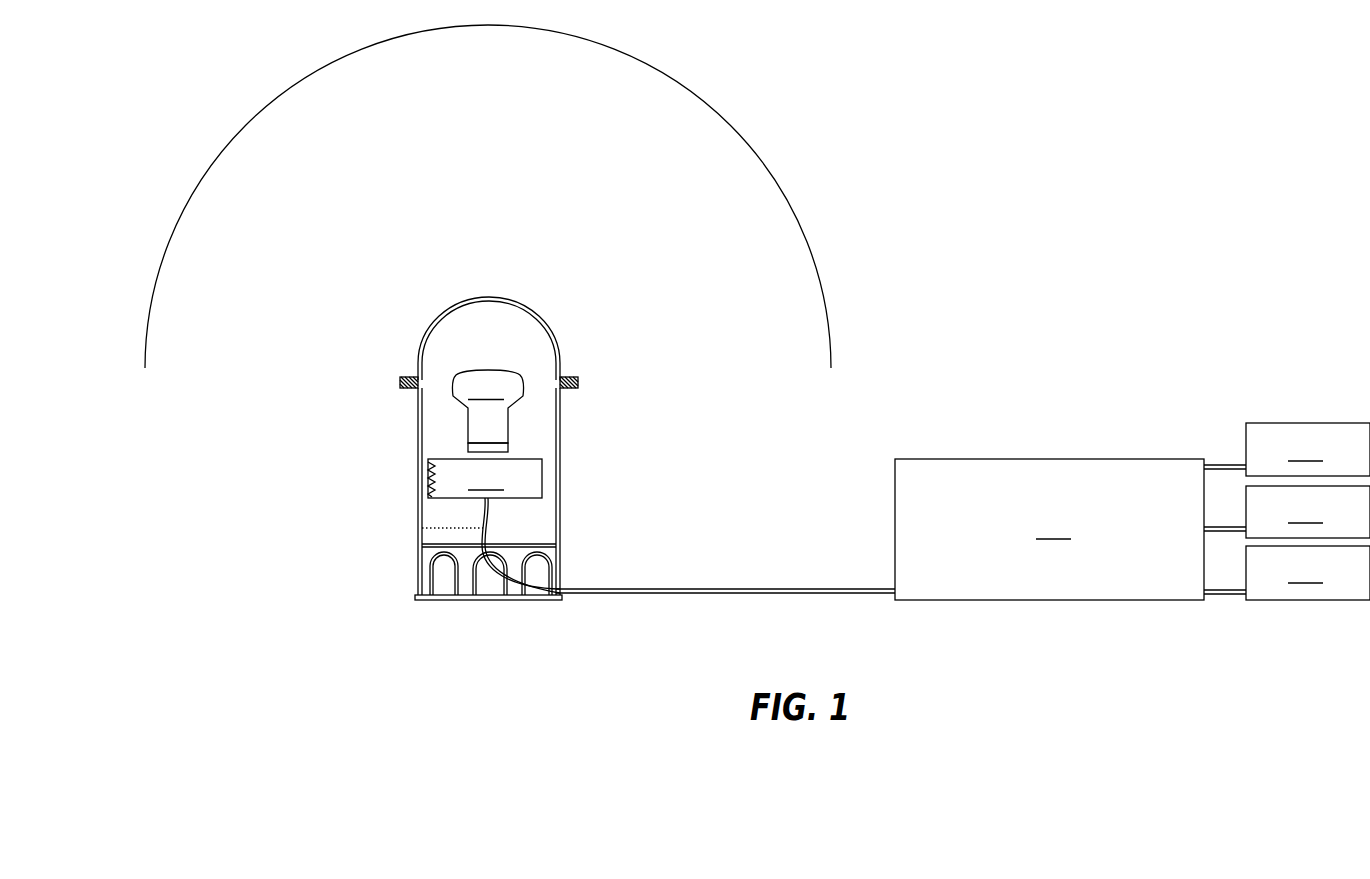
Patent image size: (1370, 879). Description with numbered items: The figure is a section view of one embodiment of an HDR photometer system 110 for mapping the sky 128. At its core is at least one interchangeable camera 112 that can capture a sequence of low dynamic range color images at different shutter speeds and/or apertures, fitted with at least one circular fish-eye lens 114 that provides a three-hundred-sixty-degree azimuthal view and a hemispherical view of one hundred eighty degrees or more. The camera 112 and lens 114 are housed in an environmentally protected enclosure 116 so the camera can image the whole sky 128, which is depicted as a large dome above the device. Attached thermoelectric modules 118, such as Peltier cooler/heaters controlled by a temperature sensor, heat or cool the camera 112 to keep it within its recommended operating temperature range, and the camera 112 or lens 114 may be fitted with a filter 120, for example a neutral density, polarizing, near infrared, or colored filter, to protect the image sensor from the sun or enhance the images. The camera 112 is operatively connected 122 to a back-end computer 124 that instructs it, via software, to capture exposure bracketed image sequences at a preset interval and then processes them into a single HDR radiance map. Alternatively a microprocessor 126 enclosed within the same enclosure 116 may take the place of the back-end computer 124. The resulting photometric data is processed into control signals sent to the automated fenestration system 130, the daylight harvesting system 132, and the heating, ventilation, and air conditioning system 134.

The HDR photometer system 110 is at (588, 327).
The interchangeable camera 112 is at (485, 478).
The circular fish-eye lens 114 is at (487, 406).
The environmentally protected enclosure 116 is at (558, 480).
The thermoelectric modules 118 is at (495, 450).
The filter 120 is at (430, 477).
The operative connection 122 is at (655, 592).
The back-end computer 124 is at (1070, 529).
The microprocessor 126 is at (435, 537).
The sky 128 is at (677, 84).
The automated fenestration system 130 is at (1308, 573).
The daylight harvesting system 132 is at (1308, 512).
The heating, ventilation, and air conditioning system 134 is at (1308, 449).